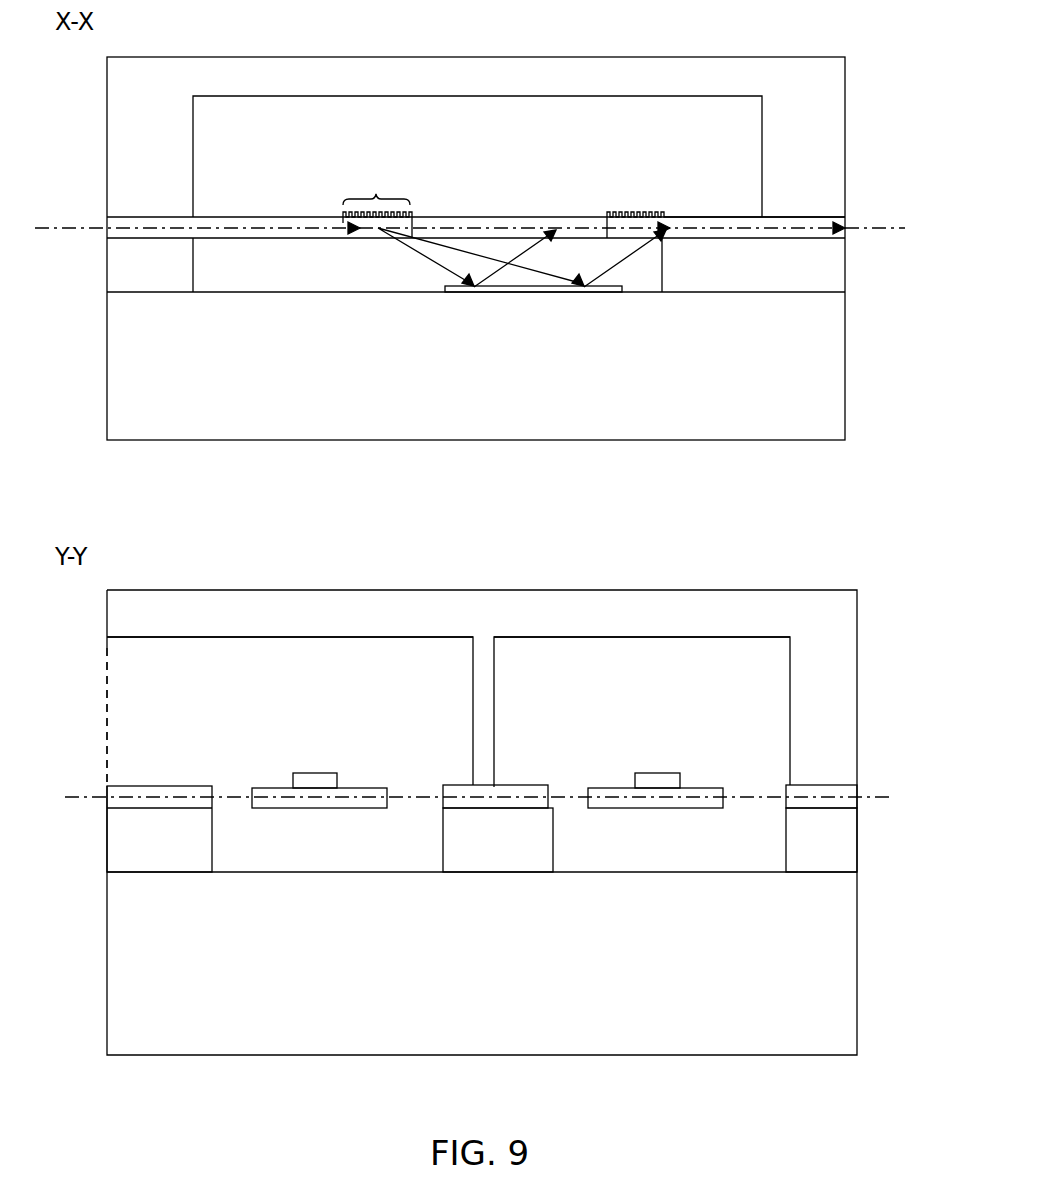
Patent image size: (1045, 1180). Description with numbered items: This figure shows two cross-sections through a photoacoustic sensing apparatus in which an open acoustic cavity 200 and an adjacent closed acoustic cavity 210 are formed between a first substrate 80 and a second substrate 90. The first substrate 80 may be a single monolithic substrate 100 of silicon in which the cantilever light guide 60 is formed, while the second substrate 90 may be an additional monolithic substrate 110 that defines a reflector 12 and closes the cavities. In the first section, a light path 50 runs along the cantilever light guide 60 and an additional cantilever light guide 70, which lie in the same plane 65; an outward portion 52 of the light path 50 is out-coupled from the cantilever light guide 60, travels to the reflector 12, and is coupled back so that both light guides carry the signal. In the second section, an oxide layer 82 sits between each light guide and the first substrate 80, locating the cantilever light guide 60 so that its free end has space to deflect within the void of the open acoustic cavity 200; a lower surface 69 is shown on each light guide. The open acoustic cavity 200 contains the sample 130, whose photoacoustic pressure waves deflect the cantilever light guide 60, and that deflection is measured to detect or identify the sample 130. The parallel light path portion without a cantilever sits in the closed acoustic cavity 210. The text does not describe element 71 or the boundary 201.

The reflector 12 is at (445, 290).
The light path 50 is at (105, 220).
The outward portion 52 is at (412, 238).
The cantilever light guide 60 is at (233, 215).
The plane 65 is at (870, 225).
The lower surface 69 is at (318, 777).
The additional cantilever light guide 70 is at (710, 208).
The waveguide section 71 is at (682, 812).
The first substrate 80 is at (527, 698).
The single monolithic substrate 100 is at (845, 410).
The oxide layer 82 is at (106, 843).
The second substrate 90 is at (517, 541).
The additional monolithic substrate 110 is at (845, 117).
The sample 130 is at (510, 158).
The open acoustic cavity 200 is at (185, 687).
The boundary 201 is at (105, 660).
The closed acoustic cavity 210 is at (772, 687).